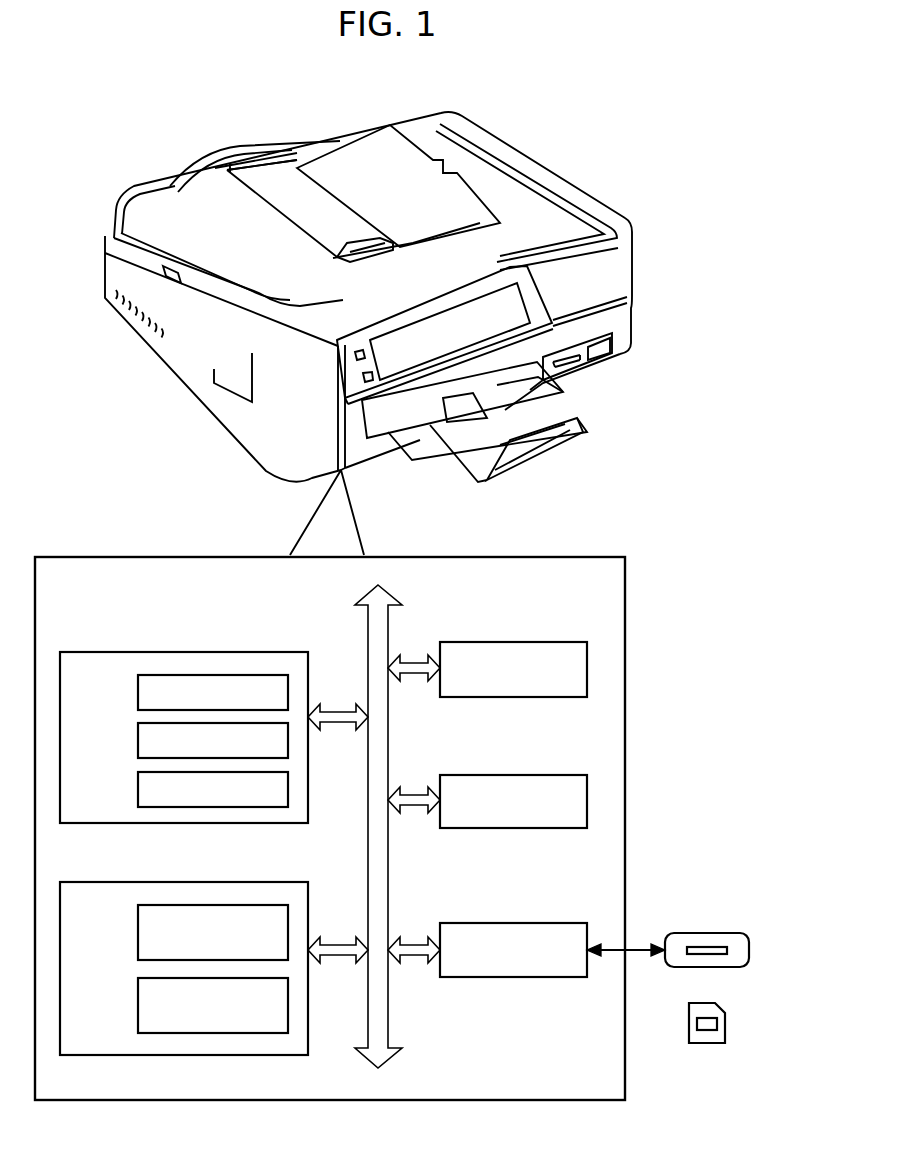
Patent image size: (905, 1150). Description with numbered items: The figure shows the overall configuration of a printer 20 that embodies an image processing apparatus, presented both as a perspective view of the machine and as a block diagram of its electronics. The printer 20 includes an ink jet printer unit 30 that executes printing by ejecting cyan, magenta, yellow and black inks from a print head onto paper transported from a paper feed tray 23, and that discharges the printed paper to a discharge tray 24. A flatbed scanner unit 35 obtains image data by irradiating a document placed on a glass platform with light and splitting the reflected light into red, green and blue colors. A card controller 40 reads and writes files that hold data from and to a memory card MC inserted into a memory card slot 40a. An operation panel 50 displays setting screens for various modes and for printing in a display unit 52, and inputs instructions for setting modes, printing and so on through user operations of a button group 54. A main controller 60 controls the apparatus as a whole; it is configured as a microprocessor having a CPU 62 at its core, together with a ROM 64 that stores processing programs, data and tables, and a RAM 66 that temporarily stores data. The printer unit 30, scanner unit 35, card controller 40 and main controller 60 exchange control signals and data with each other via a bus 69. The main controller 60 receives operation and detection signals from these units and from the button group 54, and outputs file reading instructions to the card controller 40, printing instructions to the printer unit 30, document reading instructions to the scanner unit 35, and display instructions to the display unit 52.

The printer 20 is at (179, 143).
The paper feed tray 23 is at (388, 450).
The discharge tray 24 is at (515, 407).
The ink jet printer unit 30 is at (533, 642).
The flatbed scanner unit 35 is at (533, 775).
The card controller 40 is at (533, 923).
The memory card slot 40a is at (574, 368).
The operation panel 50 is at (213, 882).
The display unit 52 is at (495, 317).
The button group 54 is at (358, 360).
The main controller 60 is at (213, 652).
The CPU 62 is at (138, 691).
The ROM 64 is at (138, 739).
The RAM 66 is at (138, 788).
The bus 69 is at (388, 1022).
The memory card MC is at (705, 1043).